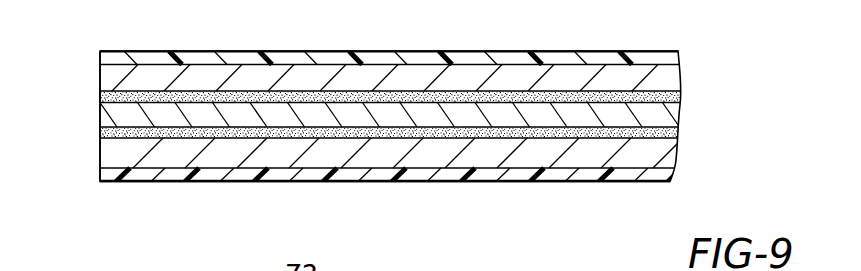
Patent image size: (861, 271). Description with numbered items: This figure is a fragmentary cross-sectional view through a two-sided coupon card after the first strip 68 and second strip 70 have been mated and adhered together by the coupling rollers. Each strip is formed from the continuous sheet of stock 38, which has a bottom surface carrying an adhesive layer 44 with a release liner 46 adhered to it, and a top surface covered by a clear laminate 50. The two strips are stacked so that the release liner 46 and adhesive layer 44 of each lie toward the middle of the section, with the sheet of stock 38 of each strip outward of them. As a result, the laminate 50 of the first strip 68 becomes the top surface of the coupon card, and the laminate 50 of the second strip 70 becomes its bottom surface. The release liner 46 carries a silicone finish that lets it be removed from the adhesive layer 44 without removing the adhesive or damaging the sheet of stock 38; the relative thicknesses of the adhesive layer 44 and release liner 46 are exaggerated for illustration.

The clear laminate 50 is at (648, 51).
The continuous sheet of stock 38 is at (672, 78).
The adhesive layer 44 is at (680, 97).
The release liner 46 is at (680, 110).
The first strip 68 is at (92, 52).
The second strip 70 is at (92, 108).